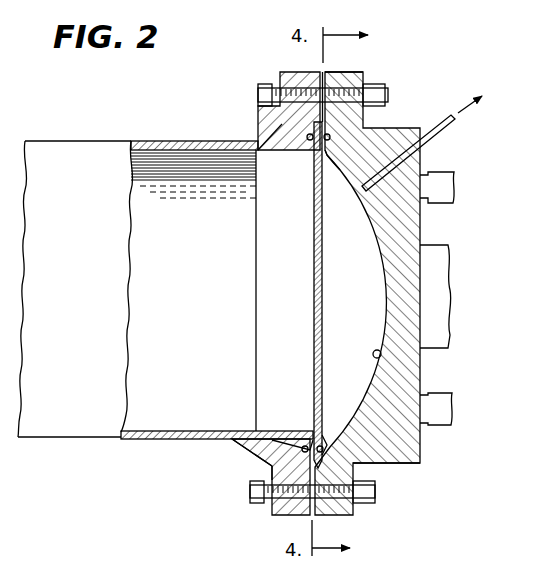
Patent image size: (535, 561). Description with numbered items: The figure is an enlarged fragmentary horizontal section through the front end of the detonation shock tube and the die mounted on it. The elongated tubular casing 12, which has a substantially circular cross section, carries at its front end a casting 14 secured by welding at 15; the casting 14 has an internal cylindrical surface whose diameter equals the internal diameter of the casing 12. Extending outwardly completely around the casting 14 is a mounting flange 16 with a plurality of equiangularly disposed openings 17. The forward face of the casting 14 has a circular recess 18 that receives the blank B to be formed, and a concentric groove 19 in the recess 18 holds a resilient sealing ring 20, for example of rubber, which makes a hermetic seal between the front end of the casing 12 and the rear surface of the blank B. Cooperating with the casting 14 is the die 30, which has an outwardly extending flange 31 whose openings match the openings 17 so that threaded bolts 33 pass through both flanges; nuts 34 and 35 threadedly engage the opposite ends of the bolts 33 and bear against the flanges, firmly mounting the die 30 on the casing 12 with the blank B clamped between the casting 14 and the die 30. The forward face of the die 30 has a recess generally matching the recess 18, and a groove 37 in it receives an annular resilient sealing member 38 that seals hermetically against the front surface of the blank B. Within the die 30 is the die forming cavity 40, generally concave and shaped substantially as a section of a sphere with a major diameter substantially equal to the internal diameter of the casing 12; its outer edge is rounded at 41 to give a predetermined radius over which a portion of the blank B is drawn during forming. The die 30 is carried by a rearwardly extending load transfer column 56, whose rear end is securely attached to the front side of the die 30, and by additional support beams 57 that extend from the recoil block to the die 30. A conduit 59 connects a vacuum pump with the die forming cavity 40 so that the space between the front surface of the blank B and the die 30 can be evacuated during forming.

The tubular casing 12 is at (147, 440).
The casting 14 is at (270, 143).
The weld 15 is at (247, 449).
The mounting flange 16 is at (290, 512).
The openings 17 is at (292, 72).
The circular recess 18 is at (308, 440).
The groove 19 is at (271, 466).
The resilient sealing ring 20 is at (283, 137).
The die 30 is at (402, 112).
The flange 31 is at (345, 74).
The threaded bolts 33 is at (372, 84).
The nut 34 is at (262, 86).
The nut 35 is at (384, 88).
The groove 37 is at (358, 465).
The resilient sealing member 38 is at (328, 434).
The die forming cavity 40 is at (381, 357).
The rounded outer edge 41 is at (328, 158).
The load transfer column 56 is at (440, 283).
The support beams 57 is at (452, 180).
The conduit 59 is at (446, 131).
The blank B is at (314, 288).